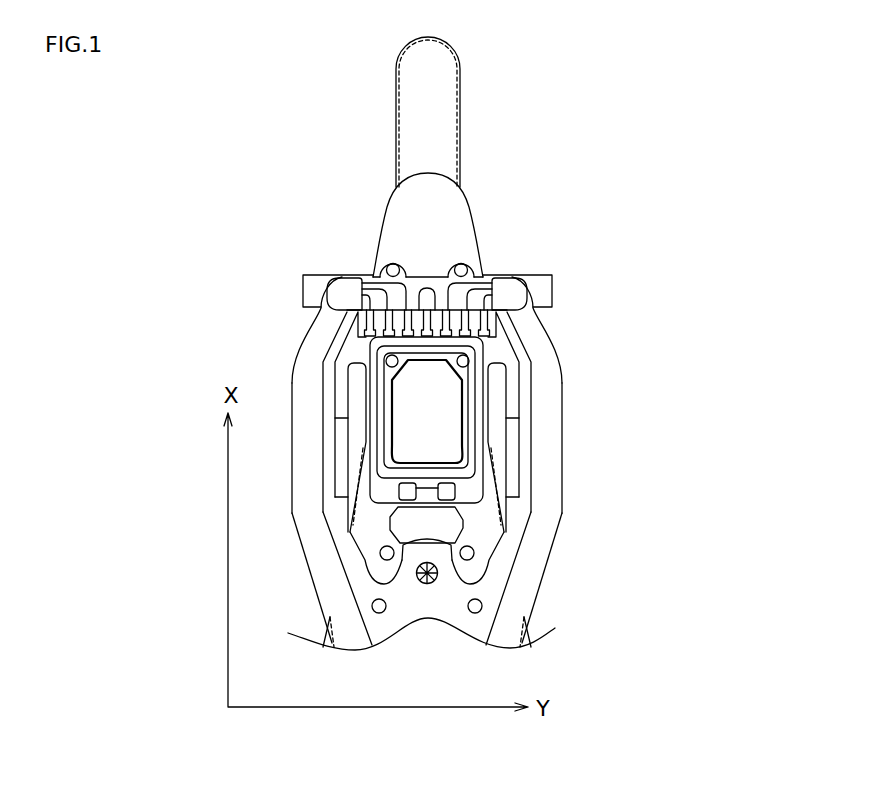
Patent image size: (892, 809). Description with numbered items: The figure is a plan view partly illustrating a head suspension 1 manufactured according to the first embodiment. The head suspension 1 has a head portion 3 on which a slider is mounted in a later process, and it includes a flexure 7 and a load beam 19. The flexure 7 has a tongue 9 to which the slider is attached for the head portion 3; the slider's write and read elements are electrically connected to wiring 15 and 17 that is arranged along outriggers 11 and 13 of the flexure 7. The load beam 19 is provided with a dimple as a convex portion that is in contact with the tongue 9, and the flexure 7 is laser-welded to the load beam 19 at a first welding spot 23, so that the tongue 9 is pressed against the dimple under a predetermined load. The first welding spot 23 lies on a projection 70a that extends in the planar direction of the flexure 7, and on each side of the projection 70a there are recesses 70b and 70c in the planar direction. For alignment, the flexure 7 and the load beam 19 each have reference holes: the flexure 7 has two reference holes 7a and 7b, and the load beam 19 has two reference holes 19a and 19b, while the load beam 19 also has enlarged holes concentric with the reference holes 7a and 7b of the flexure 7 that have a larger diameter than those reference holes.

The head suspension 1 is at (567, 145).
The head portion 3 is at (506, 337).
The flexure 7 is at (578, 492).
The reference hole 7a is at (326, 643).
The reference hole 7b is at (556, 628).
The tongue 9 is at (488, 541).
The outrigger 11 is at (335, 442).
The outrigger 13 is at (522, 428).
The wiring 15 is at (305, 490).
The wiring 17 is at (537, 553).
The load beam 19 is at (547, 552).
The reference hole 19a is at (380, 555).
The reference hole 19b is at (475, 553).
The first welding spot 23 is at (424, 584).
The projection 70a is at (427, 545).
The recess 70b is at (383, 572).
The recess 70c is at (485, 577).